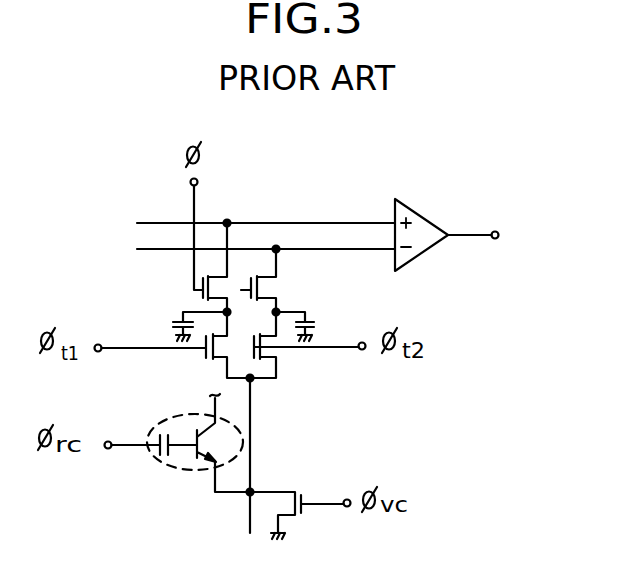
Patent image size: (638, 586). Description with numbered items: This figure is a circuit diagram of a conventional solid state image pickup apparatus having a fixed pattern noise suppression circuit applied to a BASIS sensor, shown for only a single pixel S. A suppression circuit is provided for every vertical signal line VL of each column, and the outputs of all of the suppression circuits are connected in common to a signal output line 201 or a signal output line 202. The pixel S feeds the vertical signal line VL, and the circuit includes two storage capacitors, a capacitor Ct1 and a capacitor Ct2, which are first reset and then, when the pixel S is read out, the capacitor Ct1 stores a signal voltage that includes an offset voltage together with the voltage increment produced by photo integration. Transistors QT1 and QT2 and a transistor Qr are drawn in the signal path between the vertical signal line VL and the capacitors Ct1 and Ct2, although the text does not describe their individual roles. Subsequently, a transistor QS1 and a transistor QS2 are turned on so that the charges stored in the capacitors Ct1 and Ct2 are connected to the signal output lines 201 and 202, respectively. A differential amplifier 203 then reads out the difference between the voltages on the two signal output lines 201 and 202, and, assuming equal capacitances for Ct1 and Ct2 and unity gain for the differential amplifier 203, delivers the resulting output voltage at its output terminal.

The signal output line 201 is at (346, 222).
The signal output line 202 is at (365, 250).
The differential amplifier 203 is at (432, 221).
The transistor QS1 is at (185, 269).
The transistor QS2 is at (284, 282).
The first transfer transistor QT1 is at (173, 350).
The second transfer transistor QT2 is at (306, 350).
The capacitor Ct1 is at (176, 319).
The capacitor Ct2 is at (320, 319).
The reset transistor Qr is at (300, 498).
The pixel S is at (162, 472).
The vertical signal line VL is at (250, 420).